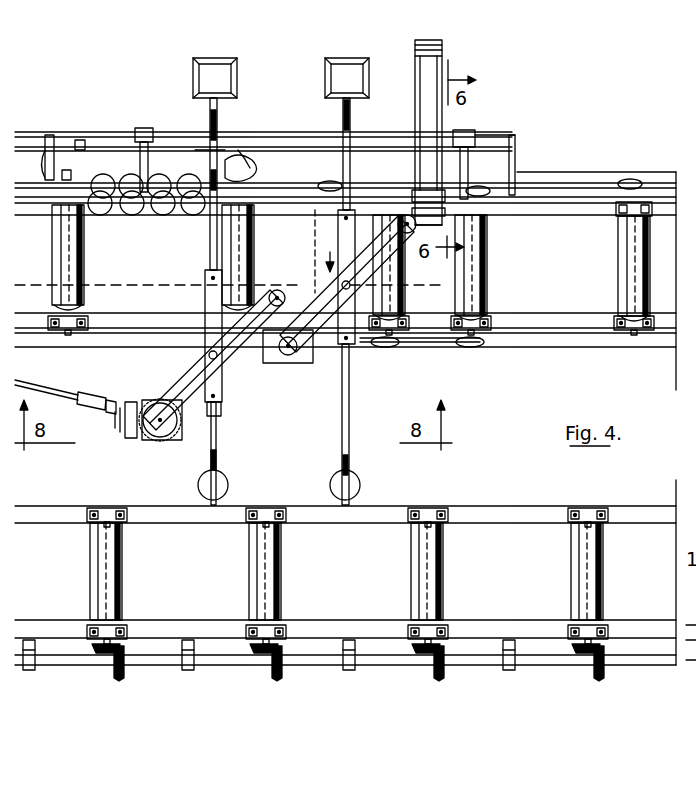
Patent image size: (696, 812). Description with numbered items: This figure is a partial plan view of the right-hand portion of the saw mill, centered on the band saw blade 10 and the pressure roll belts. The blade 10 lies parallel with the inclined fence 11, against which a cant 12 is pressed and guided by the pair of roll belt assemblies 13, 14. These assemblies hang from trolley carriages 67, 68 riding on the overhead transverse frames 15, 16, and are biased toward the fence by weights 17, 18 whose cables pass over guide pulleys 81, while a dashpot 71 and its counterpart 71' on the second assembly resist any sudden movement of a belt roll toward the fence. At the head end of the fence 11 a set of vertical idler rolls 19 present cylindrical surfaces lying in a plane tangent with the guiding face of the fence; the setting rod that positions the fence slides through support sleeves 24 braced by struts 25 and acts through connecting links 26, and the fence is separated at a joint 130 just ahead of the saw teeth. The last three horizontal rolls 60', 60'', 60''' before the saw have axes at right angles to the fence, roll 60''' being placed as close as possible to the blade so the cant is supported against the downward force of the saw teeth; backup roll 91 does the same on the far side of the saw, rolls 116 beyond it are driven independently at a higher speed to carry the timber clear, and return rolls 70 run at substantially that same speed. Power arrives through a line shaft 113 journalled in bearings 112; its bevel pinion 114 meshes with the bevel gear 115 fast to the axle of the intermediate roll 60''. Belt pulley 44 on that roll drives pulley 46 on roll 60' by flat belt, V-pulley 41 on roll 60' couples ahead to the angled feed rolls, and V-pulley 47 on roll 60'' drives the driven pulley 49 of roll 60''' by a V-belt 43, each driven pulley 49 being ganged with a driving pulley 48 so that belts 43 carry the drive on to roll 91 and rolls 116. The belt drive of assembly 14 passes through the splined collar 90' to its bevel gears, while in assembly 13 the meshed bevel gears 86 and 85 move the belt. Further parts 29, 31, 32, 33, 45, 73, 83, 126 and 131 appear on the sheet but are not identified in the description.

The saw blade 10 is at (420, 83).
The fence 11 is at (562, 210).
The cant 12 is at (142, 280).
The roll belt assembly 13 is at (196, 312).
The roll belt assembly 14 is at (326, 243).
The overhead transverse frame 15 is at (222, 428).
The overhead transverse frame 16 is at (350, 405).
The weight 17 is at (193, 90).
The weight 18 is at (369, 92).
The vertical idler rolls 19 is at (215, 212).
The support sleeves 24 is at (465, 140).
The struts 25 is at (515, 170).
The connecting link 26 is at (517, 177).
The rail clamp 29 is at (32, 668).
The brush 31 is at (105, 654).
The side brush 32 is at (121, 668).
The lower rail 33 is at (468, 642).
The V-pulley 41 is at (46, 178).
The belts 43 is at (300, 186).
The belt pulley 44 is at (252, 162).
The bearing block 45 is at (64, 328).
The belt pulley 46 is at (82, 172).
The V-pulley 47 is at (258, 186).
The driving pulley 48 is at (478, 186).
The driven pulley 49 is at (330, 184).
The horizontal roll 60' is at (84, 270).
The horizontal roll 60'' is at (250, 257).
The horizontal roll 60''' is at (408, 275).
The trolley carriage 67 is at (222, 385).
The trolley carriage 68 is at (343, 355).
The return rolls 70 is at (93, 572).
The dashpot device 71 is at (197, 485).
The collar 71' is at (326, 485).
The crank arm 73 is at (175, 390).
The guide pulleys 81 is at (343, 104).
The coupling 83 is at (130, 400).
The bevel gear 85 is at (165, 440).
The bevel gear 86 is at (135, 433).
The internally splined collar 90' is at (60, 378).
The backup roll 91 is at (486, 260).
The bearings 112 is at (195, 140).
The line shaft 113 is at (87, 140).
The bevel pinion 114 is at (240, 150).
The bevel gear 115 is at (248, 166).
The rolls 116 is at (618, 265).
The bracket 126 is at (28, 157).
The joint 130 is at (445, 208).
The rail 131 is at (410, 128).